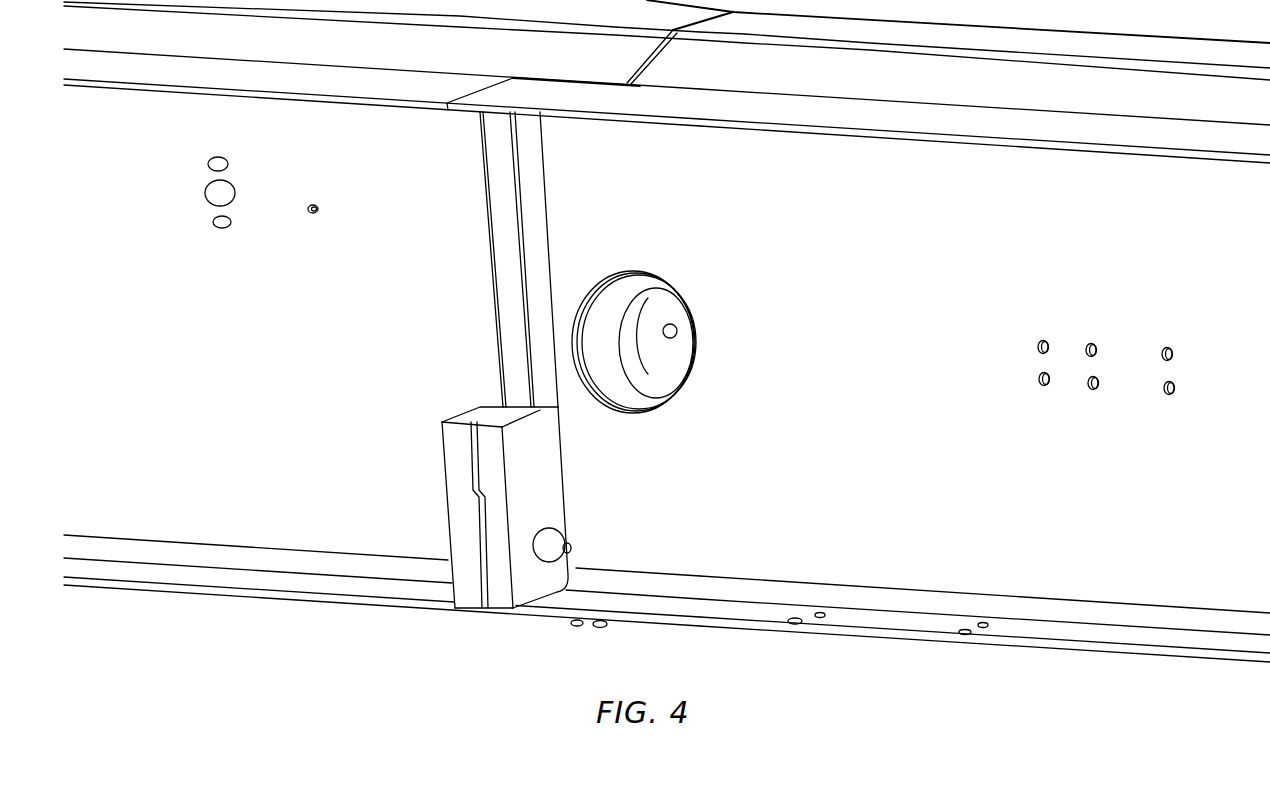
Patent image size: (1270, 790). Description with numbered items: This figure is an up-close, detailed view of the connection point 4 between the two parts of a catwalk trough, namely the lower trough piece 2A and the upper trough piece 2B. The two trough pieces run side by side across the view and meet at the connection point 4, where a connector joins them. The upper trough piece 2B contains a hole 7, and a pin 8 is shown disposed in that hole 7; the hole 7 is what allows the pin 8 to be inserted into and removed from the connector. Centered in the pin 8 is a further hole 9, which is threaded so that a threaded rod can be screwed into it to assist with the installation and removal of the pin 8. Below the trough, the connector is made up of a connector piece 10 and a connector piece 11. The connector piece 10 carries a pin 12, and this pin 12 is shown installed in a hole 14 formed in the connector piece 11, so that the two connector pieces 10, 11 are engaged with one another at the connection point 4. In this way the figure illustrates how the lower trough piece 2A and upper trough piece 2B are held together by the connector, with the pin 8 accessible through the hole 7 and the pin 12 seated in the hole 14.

The lower trough piece 2A is at (189, 365).
The upper trough piece 2B is at (1042, 268).
The connection point 4 is at (510, 244).
The hole 7 is at (615, 293).
The pin 8 is at (667, 358).
The hole 9 is at (678, 330).
The connector piece 10 is at (457, 466).
The connector piece 11 is at (546, 480).
The pin 12 is at (550, 542).
The hole 14 is at (547, 555).